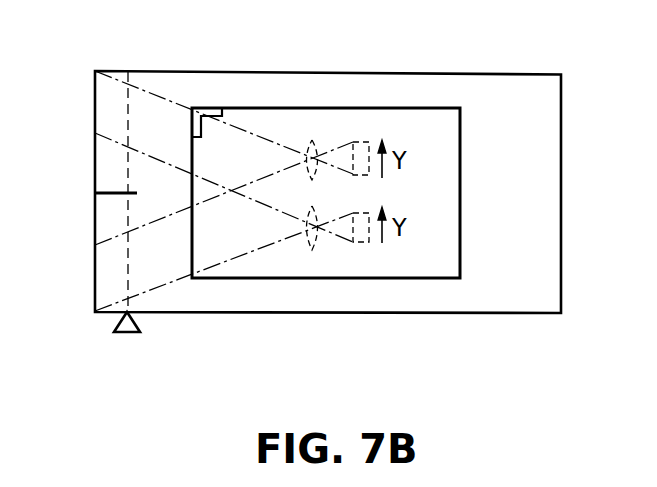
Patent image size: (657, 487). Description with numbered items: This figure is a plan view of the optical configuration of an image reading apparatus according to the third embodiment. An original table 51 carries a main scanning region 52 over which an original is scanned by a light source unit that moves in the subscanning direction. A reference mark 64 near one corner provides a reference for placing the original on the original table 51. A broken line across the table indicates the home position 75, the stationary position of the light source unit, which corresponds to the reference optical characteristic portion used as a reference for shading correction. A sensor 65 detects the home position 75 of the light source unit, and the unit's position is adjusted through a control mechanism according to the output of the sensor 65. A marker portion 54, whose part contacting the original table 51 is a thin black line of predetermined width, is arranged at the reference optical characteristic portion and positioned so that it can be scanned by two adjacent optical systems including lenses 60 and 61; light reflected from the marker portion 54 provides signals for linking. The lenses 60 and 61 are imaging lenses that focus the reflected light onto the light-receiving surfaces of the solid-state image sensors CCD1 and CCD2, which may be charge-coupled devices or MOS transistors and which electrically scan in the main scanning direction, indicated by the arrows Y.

The original table 51 is at (561, 131).
The main scanning region 52 is at (449, 107).
The marker portion 54 is at (110, 196).
The lens 60 is at (303, 138).
The lens 61 is at (306, 251).
The reference mark 64 is at (212, 105).
The sensor 65 is at (120, 334).
The home position 75 is at (128, 285).
The solid-state image sensor CCD1 is at (356, 141).
The solid-state image sensor CCD2 is at (355, 244).